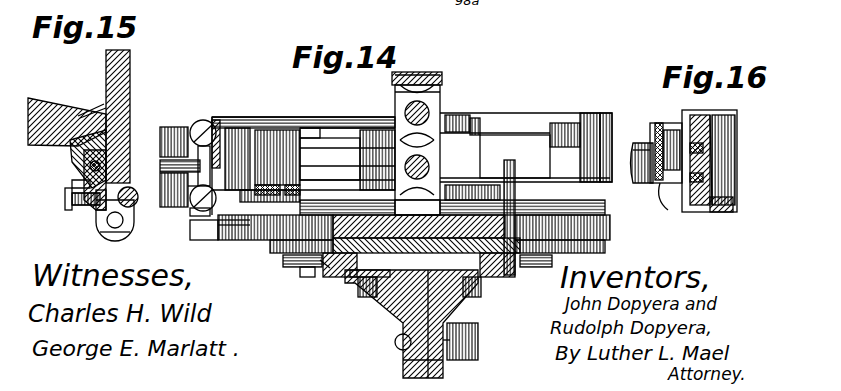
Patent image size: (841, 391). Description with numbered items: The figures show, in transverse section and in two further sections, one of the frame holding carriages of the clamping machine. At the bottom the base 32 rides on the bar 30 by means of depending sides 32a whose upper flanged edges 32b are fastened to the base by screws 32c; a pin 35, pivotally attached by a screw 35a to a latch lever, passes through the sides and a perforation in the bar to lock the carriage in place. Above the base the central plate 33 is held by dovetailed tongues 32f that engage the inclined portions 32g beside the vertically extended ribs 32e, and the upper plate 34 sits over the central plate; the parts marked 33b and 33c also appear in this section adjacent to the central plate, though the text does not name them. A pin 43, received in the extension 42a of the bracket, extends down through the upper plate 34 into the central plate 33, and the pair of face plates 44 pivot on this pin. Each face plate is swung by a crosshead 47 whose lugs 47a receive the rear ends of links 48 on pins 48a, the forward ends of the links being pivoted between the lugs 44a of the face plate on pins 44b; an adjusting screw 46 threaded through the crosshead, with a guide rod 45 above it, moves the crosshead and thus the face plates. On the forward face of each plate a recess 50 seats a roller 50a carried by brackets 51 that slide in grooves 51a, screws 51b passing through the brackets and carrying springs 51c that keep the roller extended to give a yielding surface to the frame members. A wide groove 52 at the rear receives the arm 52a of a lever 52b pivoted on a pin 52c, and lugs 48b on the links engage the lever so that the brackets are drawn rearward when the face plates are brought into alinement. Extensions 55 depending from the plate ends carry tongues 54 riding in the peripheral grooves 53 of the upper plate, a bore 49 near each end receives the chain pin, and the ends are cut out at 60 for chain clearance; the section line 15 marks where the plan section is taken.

In FIG. 14, the section line 15 is at (160, 164).
In FIG. 16, the section line 15 is at (640, 164).
In FIG. 14, the bar 30 is at (403, 318).
In FIG. 14, the base 32 is at (340, 277).
In FIG. 14, the depending side 32a is at (403, 360).
In FIG. 14, the upper flanged edge 32b is at (362, 296).
In FIG. 14, the screw 32c is at (378, 298).
In FIG. 14, the vertically extended rib 32e is at (304, 270).
In FIG. 14, the dovetailed tongue 32f is at (283, 258).
In FIG. 14, the inclined portion 32g is at (322, 272).
In FIG. 14, the central plate 33 is at (262, 250).
In FIG. 14, the bearing seat 33b is at (417, 204).
In FIG. 14, the bearing collar 33c is at (417, 212).
In FIG. 14, the upper plate 34 is at (414, 227).
In FIG. 14, the pin 35 is at (396, 342).
In FIG. 14, the screw 35a is at (478, 346).
In FIG. 14, the extension 42a is at (440, 102).
In FIG. 14, the pin 43 is at (392, 76).
In FIG. 15, the face plate 44 is at (106, 67).
In FIG. 14, the face plate 44 is at (640, 170).
In FIG. 16, the face plate 44 is at (724, 114).
In FIG. 15, the lug 44a is at (100, 106).
In FIG. 14, the lug 44a is at (455, 162).
In FIG. 16, the lug 44a is at (655, 185).
In FIG. 15, the pin 44b is at (82, 117).
In FIG. 14, the pin 44b is at (562, 122).
In FIG. 14, the guide rod 45 is at (396, 92).
In FIG. 14, the adjusting screw 46 is at (408, 158).
In FIG. 14, the crosshead 47 is at (472, 94).
In FIG. 14, the lug 47a is at (490, 108).
In FIG. 15, the link 48 is at (40, 98).
In FIG. 14, the link 48 is at (425, 156).
In FIG. 14, the pin 48a is at (305, 129).
In FIG. 15, the lug 48b is at (72, 150).
In FIG. 14, the lug 48b is at (174, 142).
In FIG. 15, the bore 49 is at (112, 240).
In FIG. 15, the recess 50 is at (140, 203).
In FIG. 14, the recess 50 is at (184, 234).
In FIG. 16, the recess 50 is at (711, 147).
In FIG. 15, the roller 50a is at (124, 238).
In FIG. 16, the roller 50a is at (730, 150).
In FIG. 15, the bracket 51 is at (90, 207).
In FIG. 14, the bracket 51 is at (188, 190).
In FIG. 16, the bracket 51 is at (697, 112).
In FIG. 14, the groove 51a is at (184, 191).
In FIG. 15, the screw 51b is at (65, 199).
In FIG. 14, the screw 51b is at (200, 120).
In FIG. 16, the screw 51b is at (668, 190).
In FIG. 15, the spring 51c is at (84, 205).
In FIG. 16, the spring 51c is at (726, 212).
In FIG. 15, the groove 52 is at (106, 212).
In FIG. 14, the groove 52 is at (232, 136).
In FIG. 15, the arm 52a is at (100, 210).
In FIG. 14, the arm 52a is at (243, 138).
In FIG. 16, the arm 52a is at (705, 130).
In FIG. 15, the lever 52b is at (90, 167).
In FIG. 14, the lever 52b is at (272, 132).
In FIG. 15, the pin 52c is at (72, 186).
In FIG. 14, the pin 52c is at (258, 130).
In FIG. 14, the groove 53 is at (222, 232).
In FIG. 14, the tongue 54 is at (218, 226).
In FIG. 14, the extension 55 is at (218, 220).
In FIG. 14, the cut out 60 is at (188, 128).